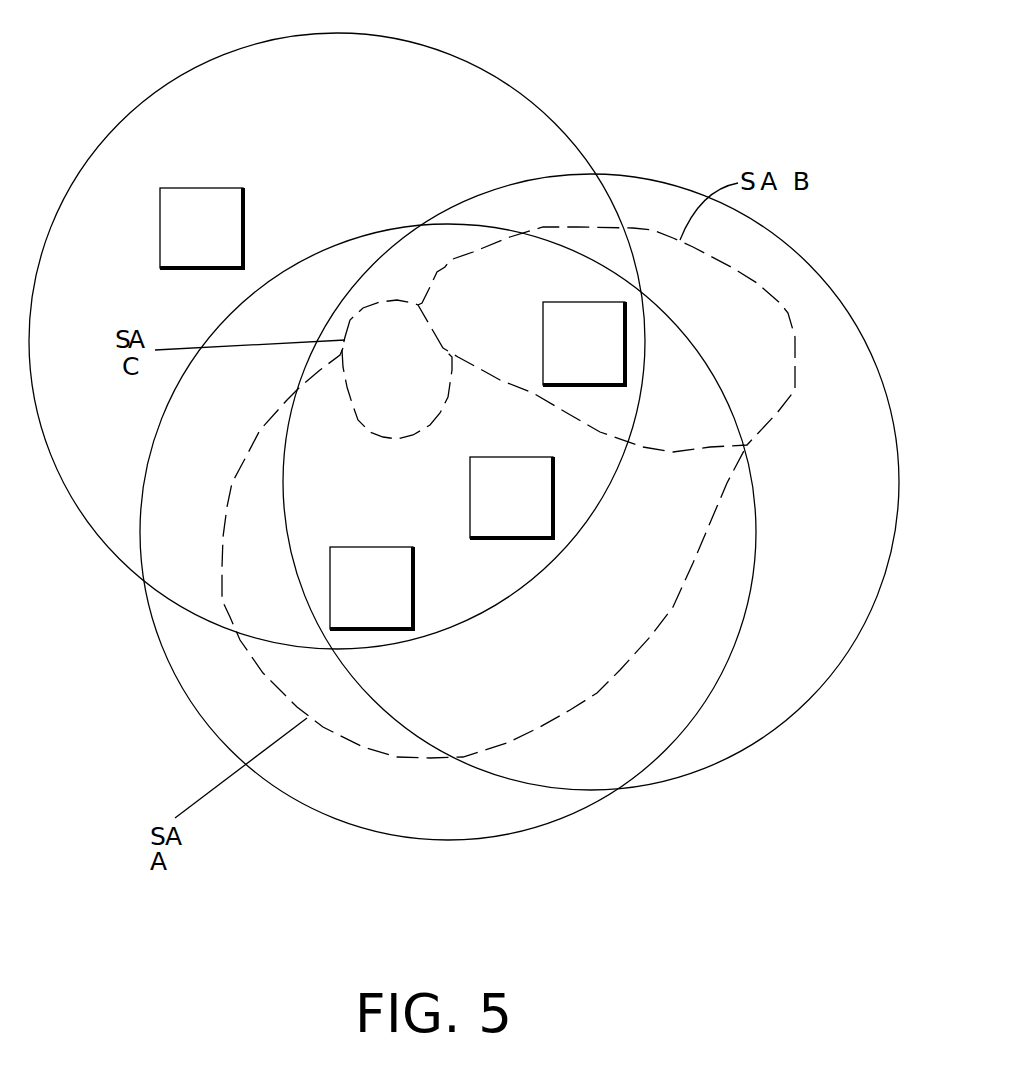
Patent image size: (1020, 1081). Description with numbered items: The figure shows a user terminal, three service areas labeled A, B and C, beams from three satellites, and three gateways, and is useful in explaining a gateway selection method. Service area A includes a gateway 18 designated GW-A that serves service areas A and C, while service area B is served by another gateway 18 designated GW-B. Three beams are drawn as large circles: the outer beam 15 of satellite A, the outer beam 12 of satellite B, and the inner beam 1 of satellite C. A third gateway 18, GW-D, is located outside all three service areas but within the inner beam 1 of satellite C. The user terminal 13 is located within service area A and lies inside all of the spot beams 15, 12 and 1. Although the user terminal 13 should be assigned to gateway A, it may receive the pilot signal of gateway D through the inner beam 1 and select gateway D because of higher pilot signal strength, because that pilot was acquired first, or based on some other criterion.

The inner beam of satellite C 1 is at (444, 50).
The outer beam of satellite B 12 is at (783, 723).
The outer beam of satellite A 15 is at (410, 840).
The gateway 18 is at (203, 188).
The user terminal 13 is at (553, 508).